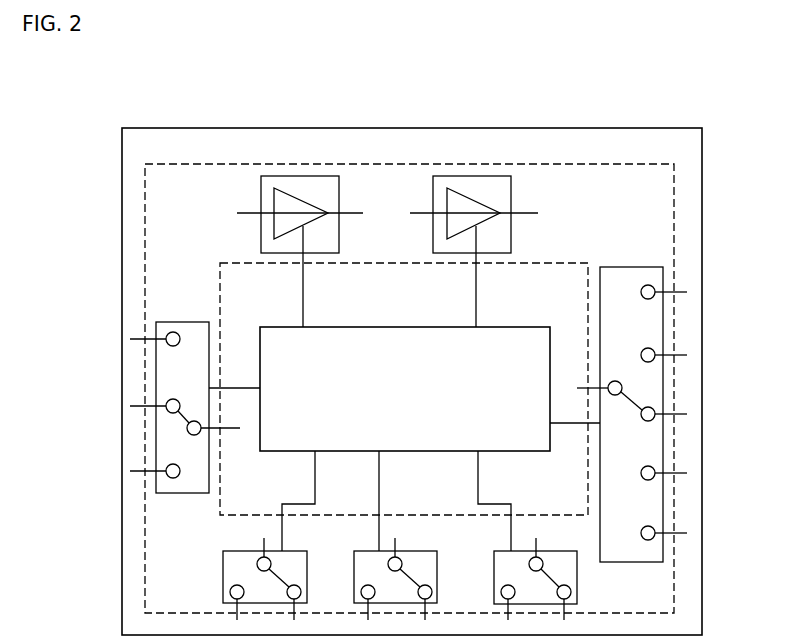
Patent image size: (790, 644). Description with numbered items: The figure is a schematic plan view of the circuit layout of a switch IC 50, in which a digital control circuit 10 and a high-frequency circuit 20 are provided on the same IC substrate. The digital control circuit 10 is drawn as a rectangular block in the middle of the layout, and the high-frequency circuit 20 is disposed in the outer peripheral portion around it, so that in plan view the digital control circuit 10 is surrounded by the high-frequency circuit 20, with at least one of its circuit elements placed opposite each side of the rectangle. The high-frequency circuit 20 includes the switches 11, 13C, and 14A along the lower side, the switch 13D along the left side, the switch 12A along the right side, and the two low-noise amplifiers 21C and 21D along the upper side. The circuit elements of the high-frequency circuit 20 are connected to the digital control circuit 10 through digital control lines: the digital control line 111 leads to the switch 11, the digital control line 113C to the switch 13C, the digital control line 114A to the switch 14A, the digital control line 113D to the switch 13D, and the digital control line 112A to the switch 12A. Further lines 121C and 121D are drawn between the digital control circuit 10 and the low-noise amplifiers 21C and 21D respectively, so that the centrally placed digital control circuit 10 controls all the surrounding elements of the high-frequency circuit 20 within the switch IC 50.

The switch IC 50 is at (662, 128).
The high-frequency circuit 20 is at (218, 164).
The low-noise amplifier 21C is at (339, 196).
The low-noise amplifier 21D is at (512, 196).
The control line 121C is at (307, 272).
The control line 121D is at (480, 272).
The digital control circuit 10 is at (404, 326).
The switch 13D is at (183, 322).
The digital control line 113D is at (231, 386).
The switch 12A is at (612, 267).
The digital control line 112A is at (574, 425).
The digital control line 111 is at (297, 505).
The digital control line 113C is at (381, 505).
The digital control line 114A is at (496, 505).
The switch 11 is at (240, 550).
The switch 13C is at (434, 538).
The switch 14A is at (545, 551).